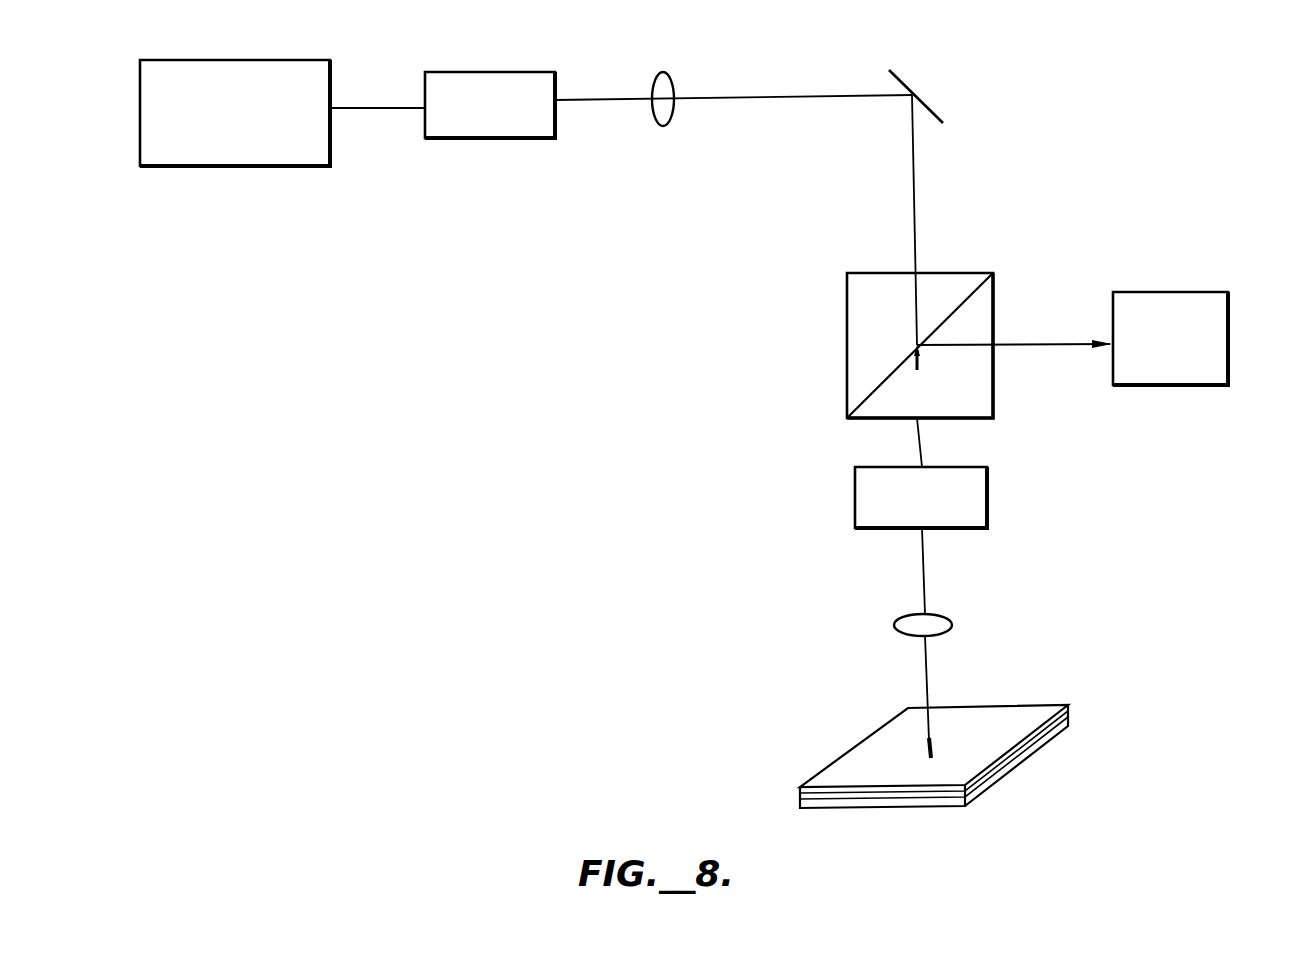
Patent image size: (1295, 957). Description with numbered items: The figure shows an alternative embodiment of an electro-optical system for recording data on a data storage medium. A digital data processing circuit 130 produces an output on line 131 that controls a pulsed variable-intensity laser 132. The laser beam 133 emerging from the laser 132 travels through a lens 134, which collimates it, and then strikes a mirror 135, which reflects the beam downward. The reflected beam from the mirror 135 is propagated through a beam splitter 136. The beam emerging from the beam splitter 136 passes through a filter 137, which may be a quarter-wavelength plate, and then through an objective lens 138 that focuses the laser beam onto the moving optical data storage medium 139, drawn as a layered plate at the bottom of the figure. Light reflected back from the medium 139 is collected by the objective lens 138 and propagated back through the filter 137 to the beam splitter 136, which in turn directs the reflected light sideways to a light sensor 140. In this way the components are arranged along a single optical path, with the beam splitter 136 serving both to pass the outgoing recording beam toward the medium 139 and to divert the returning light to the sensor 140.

The digital data processing circuit 130 is at (298, 58).
The line 131 is at (345, 108).
The pulsed variable-intensity laser 132 is at (510, 70).
The laser beam 133 is at (568, 99).
The lens 134 is at (672, 88).
The mirror 135 is at (905, 80).
The beam splitter 136 is at (996, 290).
The filter 137 is at (988, 473).
The objective lens 138 is at (945, 618).
The optical data storage medium 139 is at (1050, 708).
The light sensor 140 is at (1213, 290).